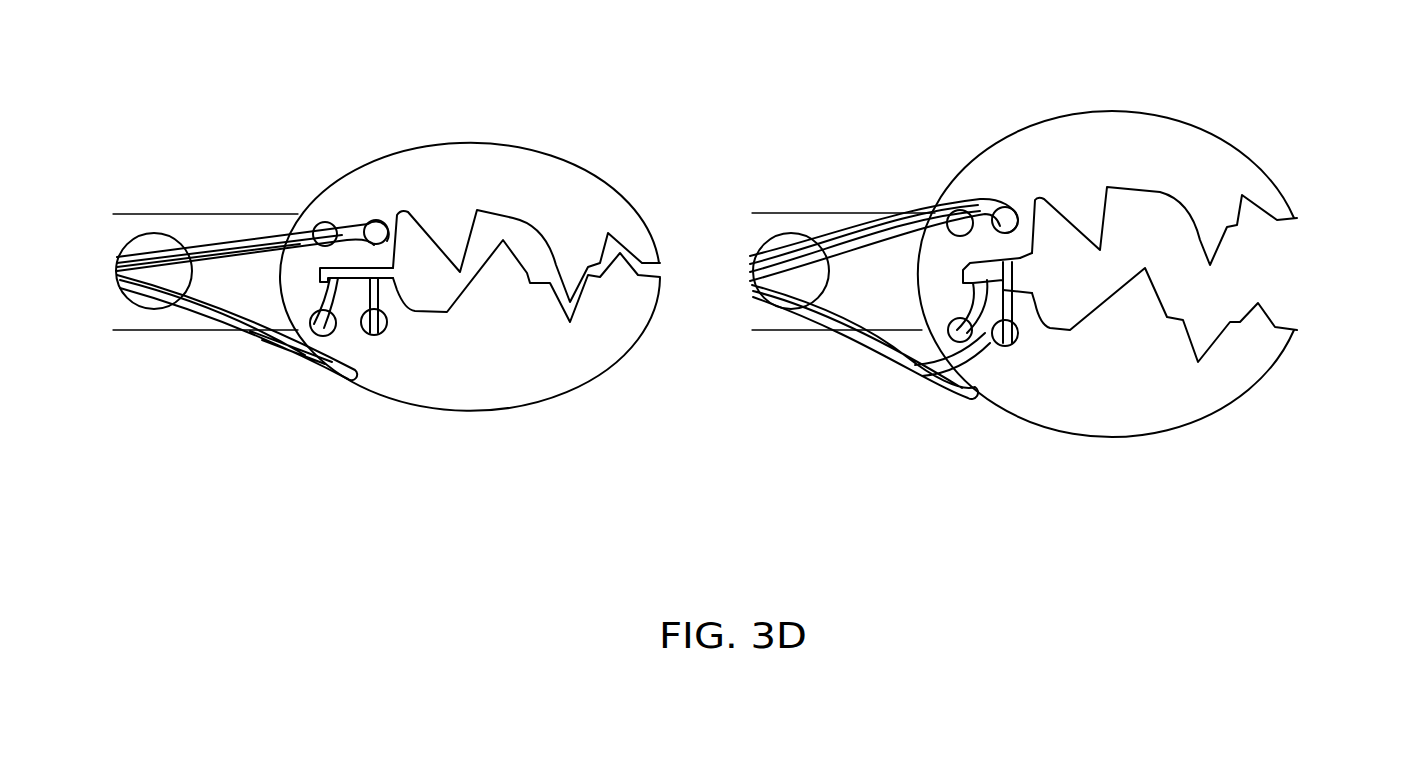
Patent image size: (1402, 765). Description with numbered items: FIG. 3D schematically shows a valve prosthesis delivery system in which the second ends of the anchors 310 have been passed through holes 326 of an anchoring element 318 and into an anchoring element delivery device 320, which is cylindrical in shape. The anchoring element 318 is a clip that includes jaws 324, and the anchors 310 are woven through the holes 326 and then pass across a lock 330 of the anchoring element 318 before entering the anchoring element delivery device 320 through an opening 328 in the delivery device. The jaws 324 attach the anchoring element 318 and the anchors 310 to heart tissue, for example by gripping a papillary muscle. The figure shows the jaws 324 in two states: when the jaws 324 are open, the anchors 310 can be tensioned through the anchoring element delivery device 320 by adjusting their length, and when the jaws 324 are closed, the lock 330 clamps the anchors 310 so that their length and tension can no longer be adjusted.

The anchors 310 is at (210, 234).
The anchoring element 318 is at (489, 54).
The anchoring element delivery device 320 is at (121, 340).
The jaws 324 is at (521, 256).
The holes 326 is at (371, 219).
The opening 328 is at (143, 232).
The lock 330 is at (357, 281).